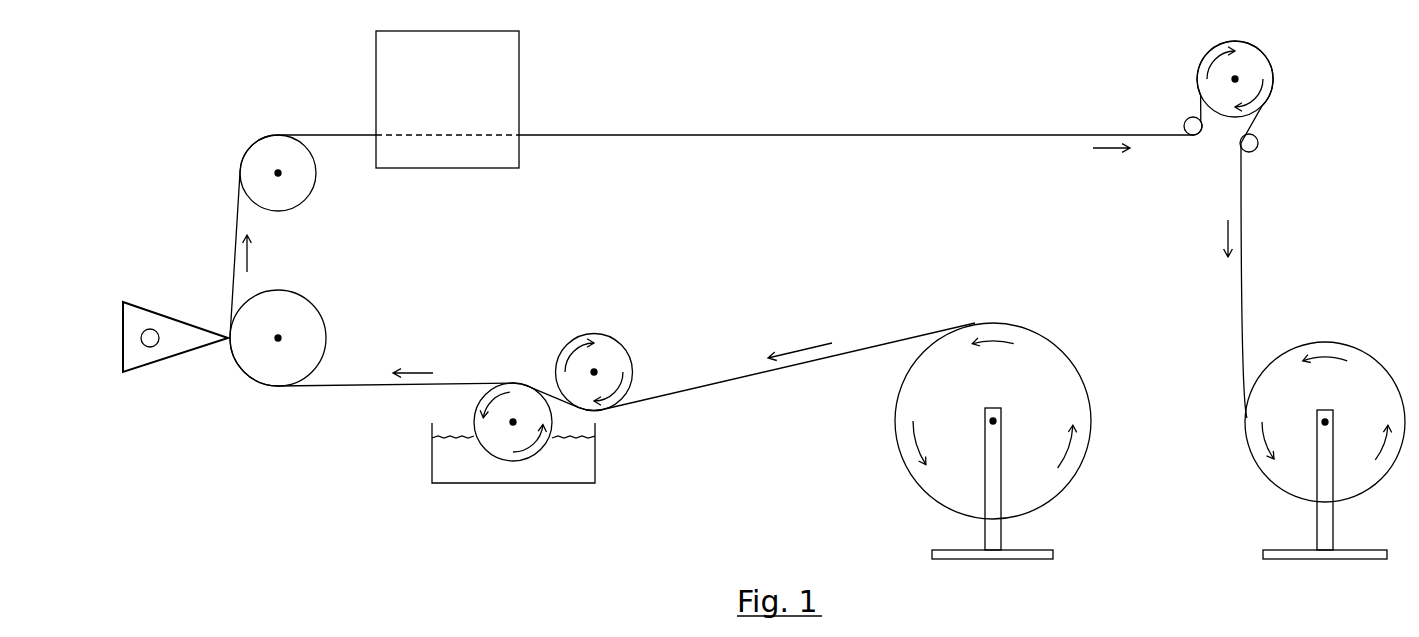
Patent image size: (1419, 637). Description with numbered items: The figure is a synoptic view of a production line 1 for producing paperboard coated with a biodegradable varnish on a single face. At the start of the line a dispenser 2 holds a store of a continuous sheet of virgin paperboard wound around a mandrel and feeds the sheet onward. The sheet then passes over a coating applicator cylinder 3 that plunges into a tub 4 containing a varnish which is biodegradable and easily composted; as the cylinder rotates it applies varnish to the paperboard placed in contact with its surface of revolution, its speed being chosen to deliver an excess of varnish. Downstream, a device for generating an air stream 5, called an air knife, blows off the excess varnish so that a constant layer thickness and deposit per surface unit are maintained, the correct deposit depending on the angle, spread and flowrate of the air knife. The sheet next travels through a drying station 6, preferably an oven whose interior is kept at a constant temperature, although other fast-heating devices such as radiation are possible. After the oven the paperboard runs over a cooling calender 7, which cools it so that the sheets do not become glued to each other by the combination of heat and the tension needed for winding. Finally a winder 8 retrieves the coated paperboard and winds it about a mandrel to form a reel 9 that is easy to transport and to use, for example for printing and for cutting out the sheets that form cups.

The production line 1 is at (303, 522).
The dispenser 2 is at (990, 552).
The coating applicator cylinder 3 is at (500, 442).
The tub 4 is at (457, 458).
The device for generating an air stream 5 is at (175, 336).
The drying station 6 is at (400, 75).
The cooling calender 7 is at (1252, 63).
The winder 8 is at (1325, 552).
The reel 9 is at (1365, 380).